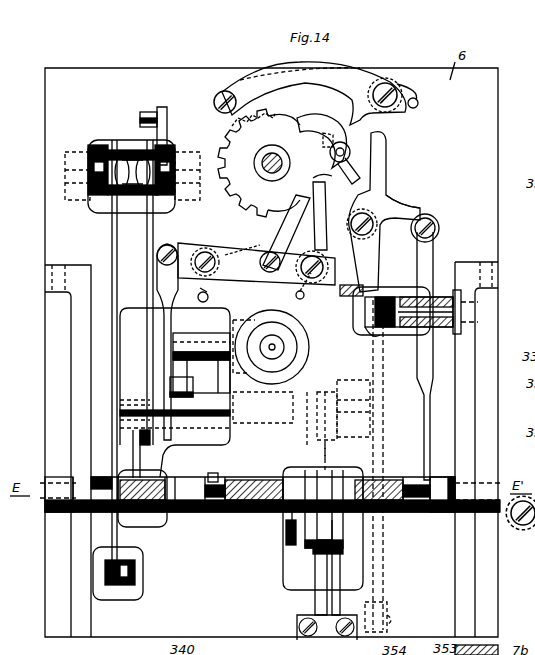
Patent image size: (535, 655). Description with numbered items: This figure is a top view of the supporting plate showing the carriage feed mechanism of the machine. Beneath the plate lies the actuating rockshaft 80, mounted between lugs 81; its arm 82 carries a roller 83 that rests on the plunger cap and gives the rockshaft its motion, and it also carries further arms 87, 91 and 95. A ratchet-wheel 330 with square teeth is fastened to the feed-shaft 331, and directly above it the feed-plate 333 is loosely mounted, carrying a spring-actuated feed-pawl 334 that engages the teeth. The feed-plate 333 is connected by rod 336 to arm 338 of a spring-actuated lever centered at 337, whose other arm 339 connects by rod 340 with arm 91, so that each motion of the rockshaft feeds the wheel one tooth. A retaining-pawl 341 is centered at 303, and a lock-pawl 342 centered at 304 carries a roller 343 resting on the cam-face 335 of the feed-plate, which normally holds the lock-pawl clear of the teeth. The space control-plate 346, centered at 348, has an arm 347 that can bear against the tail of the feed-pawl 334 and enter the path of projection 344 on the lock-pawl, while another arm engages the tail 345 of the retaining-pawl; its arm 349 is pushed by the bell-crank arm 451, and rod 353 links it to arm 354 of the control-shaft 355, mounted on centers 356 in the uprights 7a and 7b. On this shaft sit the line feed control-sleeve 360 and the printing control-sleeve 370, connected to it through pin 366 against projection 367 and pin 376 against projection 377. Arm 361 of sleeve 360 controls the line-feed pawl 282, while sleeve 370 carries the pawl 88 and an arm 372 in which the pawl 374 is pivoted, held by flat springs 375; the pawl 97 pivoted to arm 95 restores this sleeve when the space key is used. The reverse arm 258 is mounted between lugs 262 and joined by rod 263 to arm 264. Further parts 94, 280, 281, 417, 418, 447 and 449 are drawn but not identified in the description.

The upright 7a is at (75, 547).
The upright 7b is at (472, 556).
The actuating rockshaft 80 is at (218, 428).
The lugs 81 is at (362, 380).
The arm 82 is at (206, 334).
The roller 83 is at (239, 322).
The arm 87 is at (292, 436).
The pawl 88 is at (285, 556).
The arm 91 is at (190, 383).
The lever 94 is at (175, 422).
The arm 95 is at (301, 393).
The pawl 97 is at (334, 455).
The arm 258 is at (93, 146).
The lugs 262 is at (66, 195).
The rod 263 is at (115, 246).
The arm 264 is at (138, 573).
The stop 280 is at (147, 112).
The rod 281 is at (166, 138).
The line-feed pawl 282 is at (150, 352).
The center 303 is at (291, 286).
The center 304 is at (398, 90).
The ratchet-wheel 330 is at (228, 147).
The feed-shaft 331 is at (263, 160).
The feed-plate 333 is at (272, 152).
The feed-pawl 334 is at (320, 128).
The cam-face 335 is at (240, 118).
The rod 336 is at (274, 240).
The center 337 is at (206, 252).
The arm 338 is at (244, 270).
The arm 339 is at (174, 242).
The rod 340 is at (166, 282).
The retaining-pawl 341 is at (326, 208).
The lock-pawl 342 is at (300, 66).
The roller 343 is at (215, 96).
The projection 344 is at (385, 118).
The tail 345 is at (330, 267).
The space control-plate 346 is at (386, 205).
The arm 347 is at (383, 165).
The center 348 is at (372, 226).
The arm 349 is at (372, 282).
The rod 353 is at (430, 258).
The arm 354 is at (426, 512).
The control-shaft 355 is at (394, 480).
The centers 356 is at (452, 476).
The line feed control-sleeve 360 is at (156, 498).
The arm 361 is at (135, 452).
The pin 366 is at (221, 478).
The projection 367 is at (209, 473).
The printing control-sleeve 370 is at (293, 470).
The arm 372 is at (346, 537).
The pawl 374 is at (315, 563).
The flat springs 375 is at (315, 612).
The pin 376 is at (273, 511).
The projection 377 is at (292, 530).
The member 417 is at (378, 604).
The rod 418 is at (378, 359).
The shaft 447 is at (468, 312).
The member 449 is at (390, 339).
The arm 451 is at (352, 296).